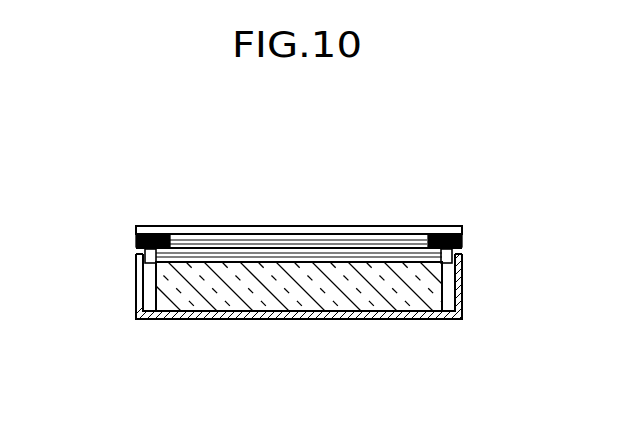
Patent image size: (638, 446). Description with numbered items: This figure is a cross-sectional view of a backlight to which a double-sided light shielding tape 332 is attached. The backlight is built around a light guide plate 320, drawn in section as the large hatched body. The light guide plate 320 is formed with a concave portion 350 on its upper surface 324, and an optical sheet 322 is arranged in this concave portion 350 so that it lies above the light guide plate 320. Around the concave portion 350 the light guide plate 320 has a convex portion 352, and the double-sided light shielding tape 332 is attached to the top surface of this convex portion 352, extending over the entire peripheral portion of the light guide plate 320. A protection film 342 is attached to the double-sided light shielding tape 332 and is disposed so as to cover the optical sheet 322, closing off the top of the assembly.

The light guide plate 320 is at (334, 300).
The optical sheet 322 is at (266, 235).
The upper surface 324 is at (237, 260).
The double-sided light shielding tape 332 is at (136, 241).
The protection film 342 is at (389, 226).
The concave portion 350 is at (198, 258).
The convex portion 352 is at (137, 256).